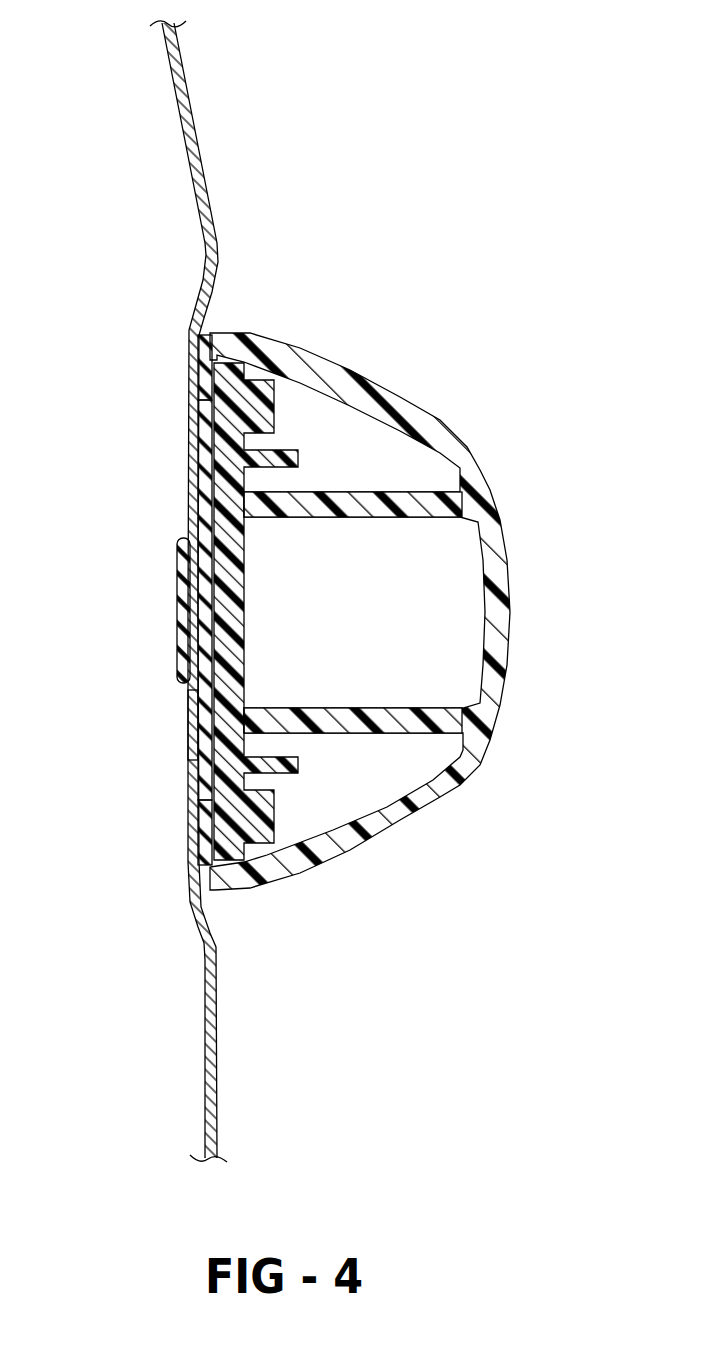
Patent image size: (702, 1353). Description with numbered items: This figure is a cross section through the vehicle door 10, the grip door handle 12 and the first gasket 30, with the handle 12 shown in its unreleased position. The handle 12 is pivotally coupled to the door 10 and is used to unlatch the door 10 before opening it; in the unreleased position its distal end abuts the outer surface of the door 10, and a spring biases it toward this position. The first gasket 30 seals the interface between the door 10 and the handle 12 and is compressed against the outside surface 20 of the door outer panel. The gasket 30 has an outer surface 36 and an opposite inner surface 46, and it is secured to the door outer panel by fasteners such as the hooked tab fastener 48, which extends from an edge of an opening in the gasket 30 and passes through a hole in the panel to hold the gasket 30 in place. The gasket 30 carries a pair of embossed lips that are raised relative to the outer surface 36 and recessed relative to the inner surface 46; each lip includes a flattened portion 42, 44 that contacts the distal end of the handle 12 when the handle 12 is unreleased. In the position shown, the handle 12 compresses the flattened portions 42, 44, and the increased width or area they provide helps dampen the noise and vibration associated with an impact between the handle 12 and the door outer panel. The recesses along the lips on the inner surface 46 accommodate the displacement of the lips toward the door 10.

The vehicle door 10 is at (205, 1117).
The outside surface 20 is at (190, 108).
The grip door handle 12 is at (470, 462).
The first gasket 30 is at (205, 437).
The outer surface 36 is at (200, 648).
The flattened portion 42 is at (210, 388).
The flattened portion 44 is at (210, 848).
The inner surface 46 is at (198, 697).
The fastener 48 is at (177, 608).